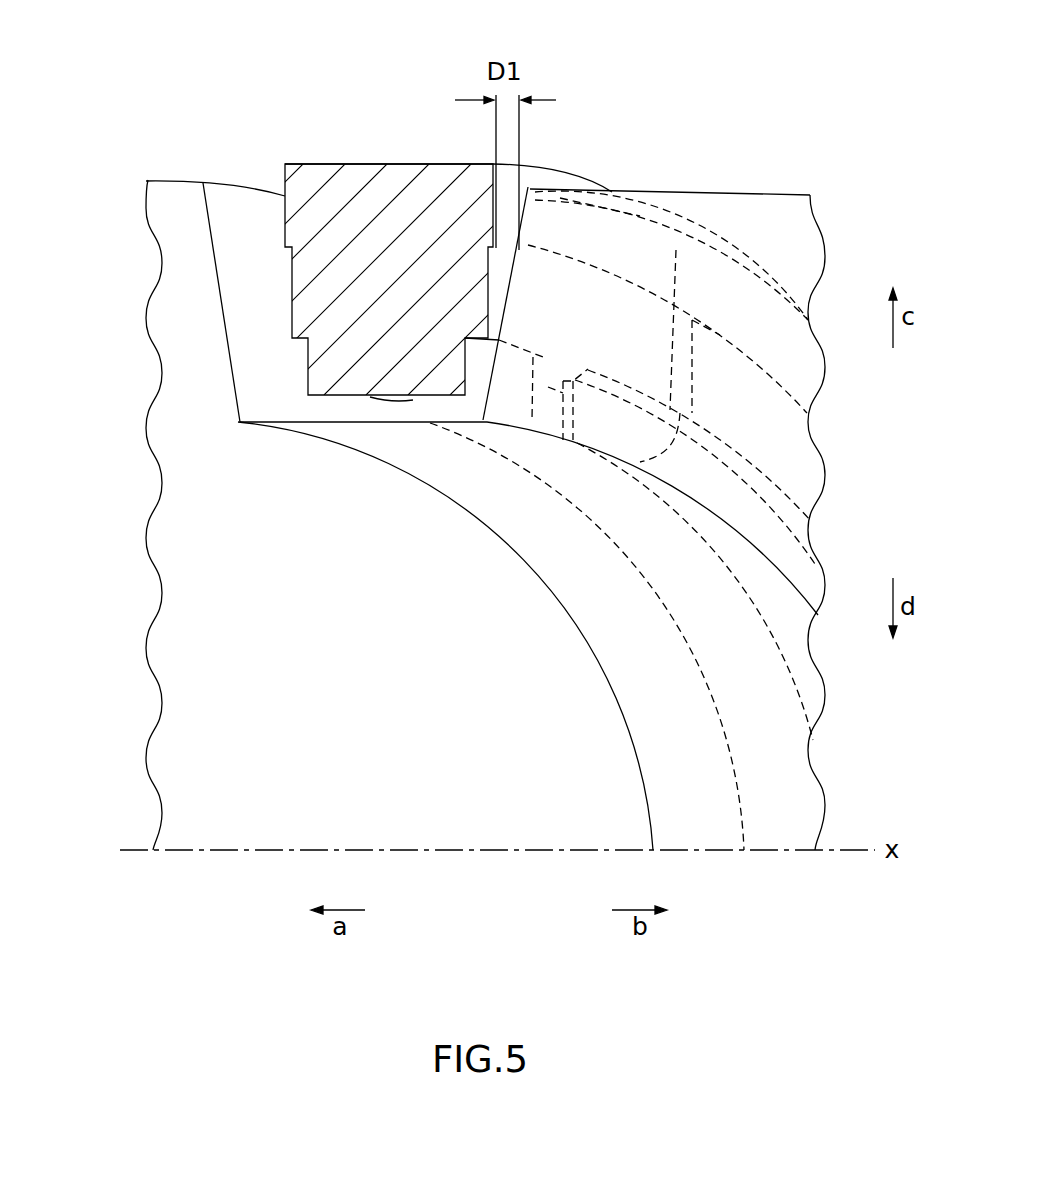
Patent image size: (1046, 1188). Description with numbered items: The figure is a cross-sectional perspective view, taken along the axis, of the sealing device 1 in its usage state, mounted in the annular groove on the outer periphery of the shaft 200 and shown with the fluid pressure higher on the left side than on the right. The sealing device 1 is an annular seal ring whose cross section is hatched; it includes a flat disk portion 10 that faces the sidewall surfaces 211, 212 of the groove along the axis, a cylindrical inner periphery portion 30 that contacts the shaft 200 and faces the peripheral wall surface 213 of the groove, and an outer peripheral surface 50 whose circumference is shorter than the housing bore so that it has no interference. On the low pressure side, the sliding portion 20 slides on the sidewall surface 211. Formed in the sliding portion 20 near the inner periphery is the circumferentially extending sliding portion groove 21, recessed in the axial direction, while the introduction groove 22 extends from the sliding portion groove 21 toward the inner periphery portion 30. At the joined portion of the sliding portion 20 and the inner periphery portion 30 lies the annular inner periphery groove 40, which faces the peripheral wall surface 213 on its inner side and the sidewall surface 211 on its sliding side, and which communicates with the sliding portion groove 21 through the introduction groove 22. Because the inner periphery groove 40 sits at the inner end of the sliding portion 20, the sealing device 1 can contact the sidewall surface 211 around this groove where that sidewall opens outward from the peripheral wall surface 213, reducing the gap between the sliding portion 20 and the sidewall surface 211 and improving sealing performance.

The sealing device 1 is at (658, 72).
The disk portion 10 is at (285, 217).
The sliding portion 20 is at (528, 184).
The sliding portion groove 21 is at (580, 294).
The introduction groove 22 is at (590, 373).
The inner periphery portion 30 is at (380, 398).
The inner periphery groove 40 is at (680, 413).
The outer peripheral surface 50 is at (380, 162).
The shaft 200 is at (151, 175).
The sidewall surface 211 is at (737, 290).
The sidewall surface 212 is at (227, 203).
The peripheral wall surface 213 is at (272, 412).